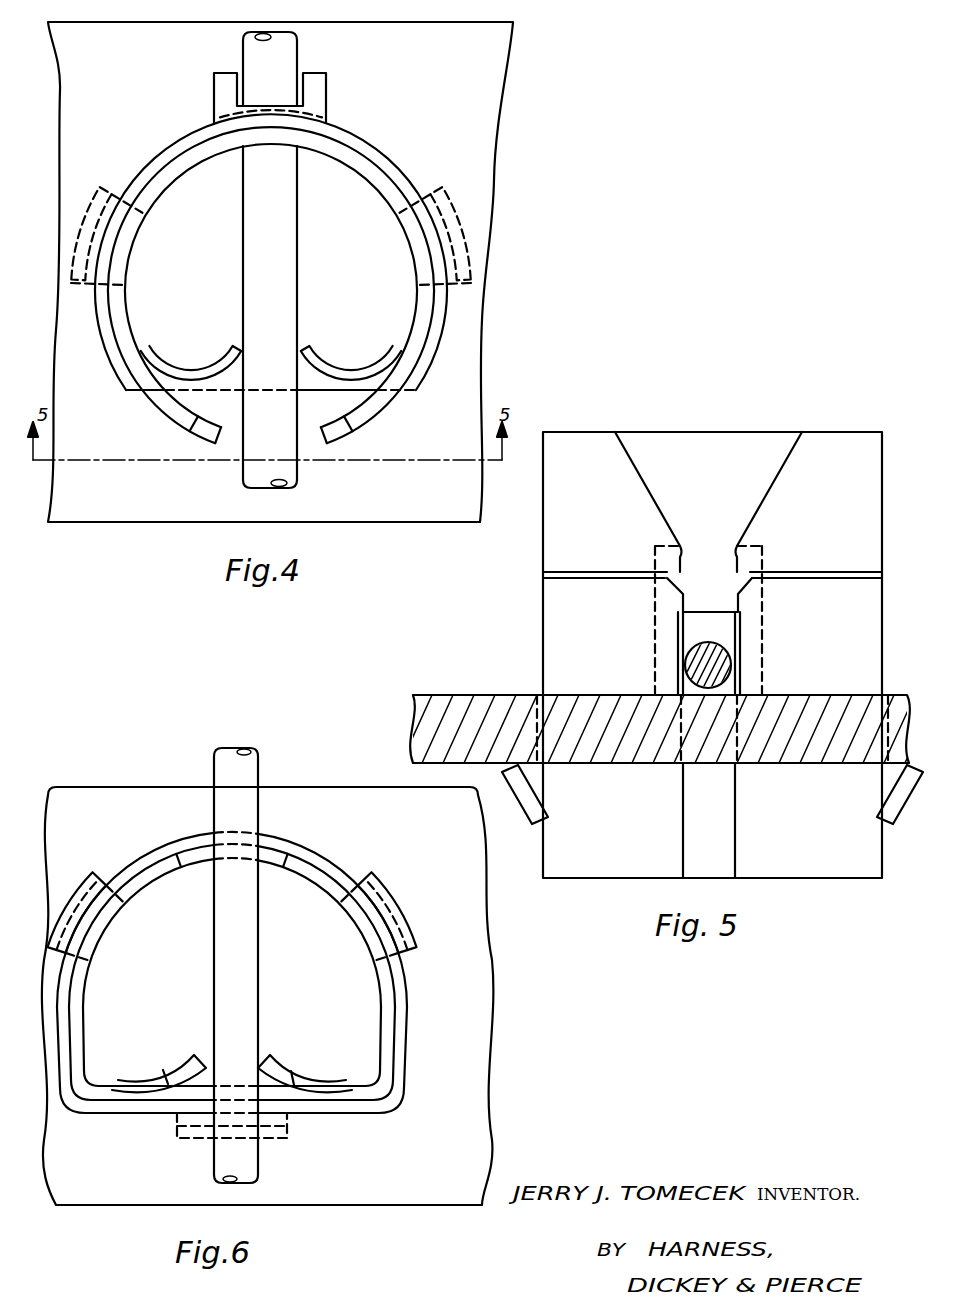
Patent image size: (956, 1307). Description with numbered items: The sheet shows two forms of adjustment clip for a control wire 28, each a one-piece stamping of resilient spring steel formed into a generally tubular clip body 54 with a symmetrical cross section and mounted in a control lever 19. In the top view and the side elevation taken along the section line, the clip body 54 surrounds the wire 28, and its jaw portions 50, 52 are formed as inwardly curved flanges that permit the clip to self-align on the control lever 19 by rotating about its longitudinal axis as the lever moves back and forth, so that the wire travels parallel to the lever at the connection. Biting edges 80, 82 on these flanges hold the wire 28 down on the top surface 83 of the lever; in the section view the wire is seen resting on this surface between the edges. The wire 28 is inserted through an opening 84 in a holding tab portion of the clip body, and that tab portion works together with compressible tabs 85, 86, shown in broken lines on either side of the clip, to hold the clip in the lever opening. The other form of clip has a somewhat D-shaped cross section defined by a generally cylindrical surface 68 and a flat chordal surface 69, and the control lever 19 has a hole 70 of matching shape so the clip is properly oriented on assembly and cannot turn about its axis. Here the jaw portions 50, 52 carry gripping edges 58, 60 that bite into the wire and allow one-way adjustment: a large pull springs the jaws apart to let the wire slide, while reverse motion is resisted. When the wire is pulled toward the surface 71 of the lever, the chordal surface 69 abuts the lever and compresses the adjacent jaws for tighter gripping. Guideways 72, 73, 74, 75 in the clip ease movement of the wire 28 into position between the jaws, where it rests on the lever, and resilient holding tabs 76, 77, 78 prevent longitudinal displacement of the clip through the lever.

In FIG. 4, the control lever 19 is at (513, 53).
In FIG. 5, the control lever 19 is at (452, 692).
In FIG. 6, the control lever 19 is at (136, 811).
In FIG. 4, the control wire 28 is at (238, 467).
In FIG. 5, the control wire 28 is at (731, 651).
In FIG. 6, the control wire 28 is at (261, 772).
In FIG. 4, the jaw portion 50 is at (195, 374).
In FIG. 5, the jaw portion 50 is at (672, 614).
In FIG. 6, the jaw portion 50 is at (124, 1088).
In FIG. 4, the jaw portion 52 is at (345, 376).
In FIG. 5, the jaw portion 52 is at (749, 600).
In FIG. 6, the jaw portion 52 is at (313, 1083).
In FIG. 4, the clip body 54 is at (373, 155).
In FIG. 5, the clip body 54 is at (542, 645).
In FIG. 6, the clip body 54 is at (399, 1019).
In FIG. 6, the gripping edge 58 is at (200, 1058).
In FIG. 6, the gripping edge 60 is at (262, 1062).
In FIG. 6, the cylindrical surface 68 is at (322, 849).
In FIG. 6, the chordal surface 69 is at (336, 1111).
In FIG. 4, the hole 70 is at (428, 360).
In FIG. 6, the hole 70 is at (196, 843).
In FIG. 6, the surface 71 is at (140, 1107).
In FIG. 6, the guideway 72 is at (192, 860).
In FIG. 6, the guideway 73 is at (277, 862).
In FIG. 6, the guideway 74 is at (175, 1068).
In FIG. 6, the guideway 75 is at (289, 1069).
In FIG. 6, the resilient holding tab 76 is at (77, 884).
In FIG. 6, the resilient holding tab 77 is at (400, 903).
In FIG. 6, the resilient holding tab 78 is at (187, 1139).
In FIG. 5, the biting edge 80 is at (693, 638).
In FIG. 5, the biting edge 82 is at (722, 633).
In FIG. 5, the top surface 83 is at (823, 692).
In FIG. 4, the opening 84 is at (309, 88).
In FIG. 5, the opening 84 is at (705, 610).
In FIG. 4, the compressible tab 85 is at (110, 190).
In FIG. 5, the compressible tab 85 is at (531, 830).
In FIG. 4, the compressible tab 86 is at (454, 214).
In FIG. 5, the compressible tab 86 is at (894, 826).